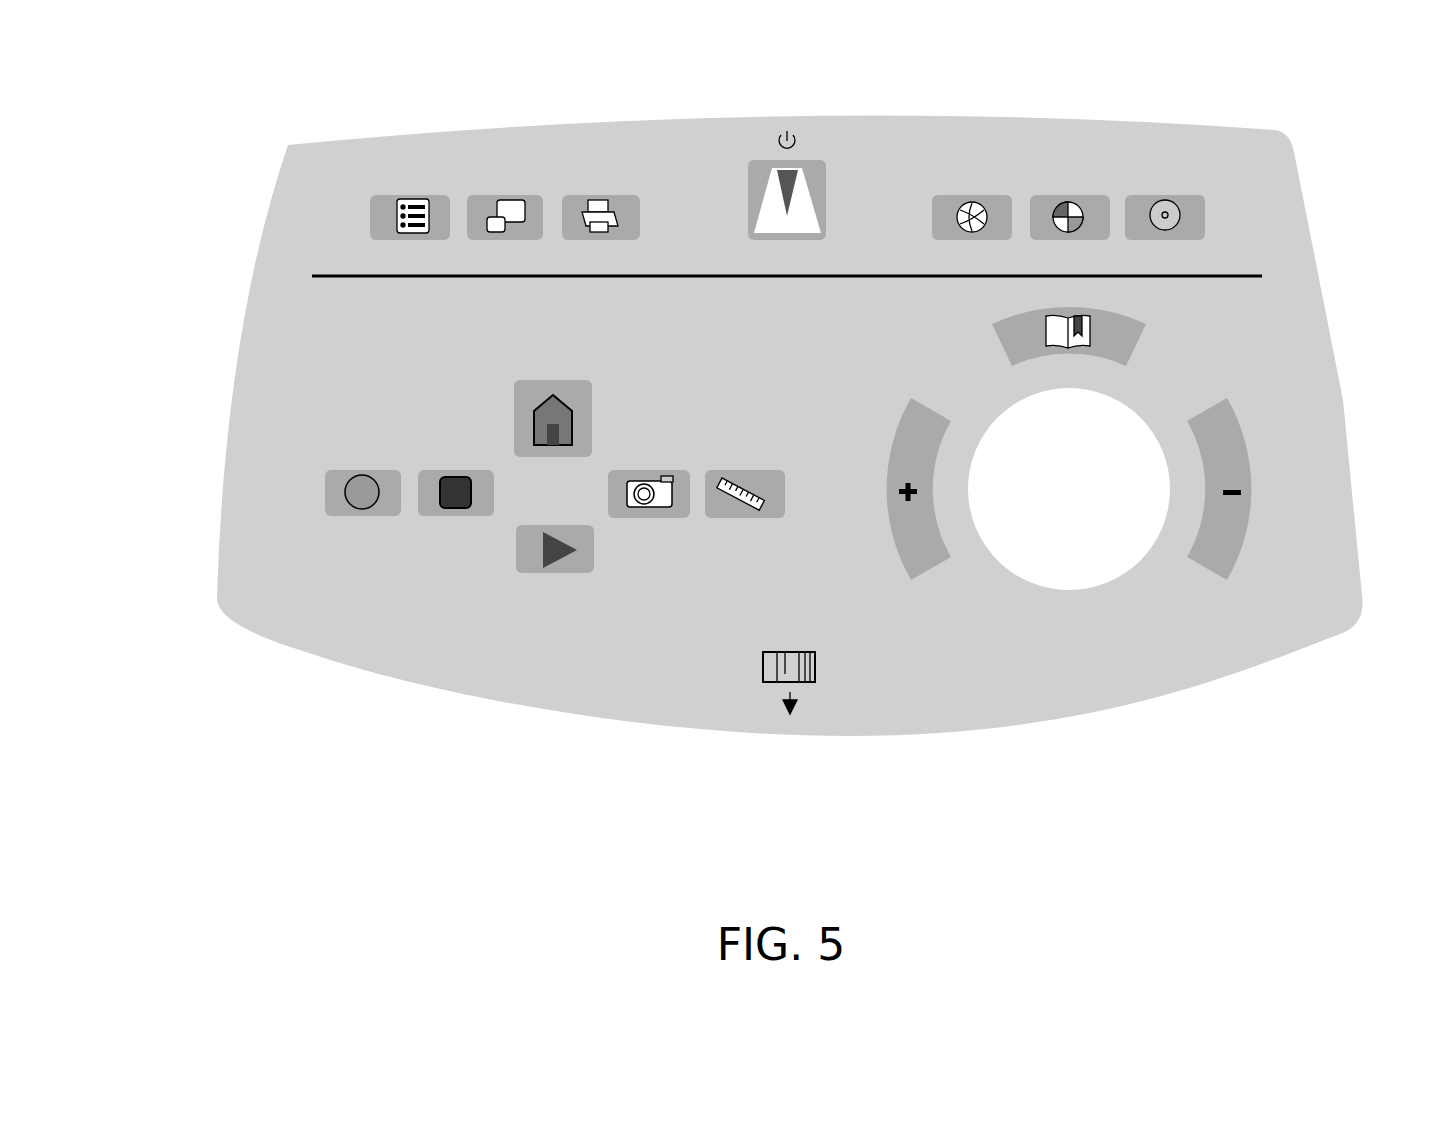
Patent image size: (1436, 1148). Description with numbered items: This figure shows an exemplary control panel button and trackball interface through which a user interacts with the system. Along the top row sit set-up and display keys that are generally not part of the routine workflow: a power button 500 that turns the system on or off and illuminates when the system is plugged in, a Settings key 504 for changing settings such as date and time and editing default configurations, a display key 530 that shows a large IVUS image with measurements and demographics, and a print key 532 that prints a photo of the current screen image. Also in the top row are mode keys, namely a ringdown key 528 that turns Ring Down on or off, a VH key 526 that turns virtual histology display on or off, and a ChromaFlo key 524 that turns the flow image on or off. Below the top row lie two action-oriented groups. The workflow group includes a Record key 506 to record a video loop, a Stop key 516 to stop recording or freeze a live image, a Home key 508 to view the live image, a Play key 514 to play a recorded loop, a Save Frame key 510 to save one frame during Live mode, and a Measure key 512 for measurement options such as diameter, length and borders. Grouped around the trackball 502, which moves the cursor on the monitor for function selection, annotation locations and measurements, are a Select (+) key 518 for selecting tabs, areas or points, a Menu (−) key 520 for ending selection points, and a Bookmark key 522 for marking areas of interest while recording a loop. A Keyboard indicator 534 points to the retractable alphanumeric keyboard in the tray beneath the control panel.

The power button 500 is at (758, 178).
The trackball 502 is at (1033, 537).
The Settings key 504 is at (382, 218).
The Record key 506 is at (335, 477).
The Home key 508 is at (528, 402).
The Save Frame key 510 is at (647, 507).
The Measure key 512 is at (722, 478).
The Play key 514 is at (535, 535).
The Stop key 516 is at (433, 490).
The Select (+) key 518 is at (922, 538).
The Menu (−) key 520 is at (1222, 538).
The Bookmark key 522 is at (1122, 338).
The ChromaFlo key 524 is at (1182, 202).
The VH key 526 is at (1097, 227).
The ringdown key 528 is at (957, 202).
The display key 530 is at (533, 200).
The print key 532 is at (633, 215).
The Keyboard indicator 534 is at (808, 680).